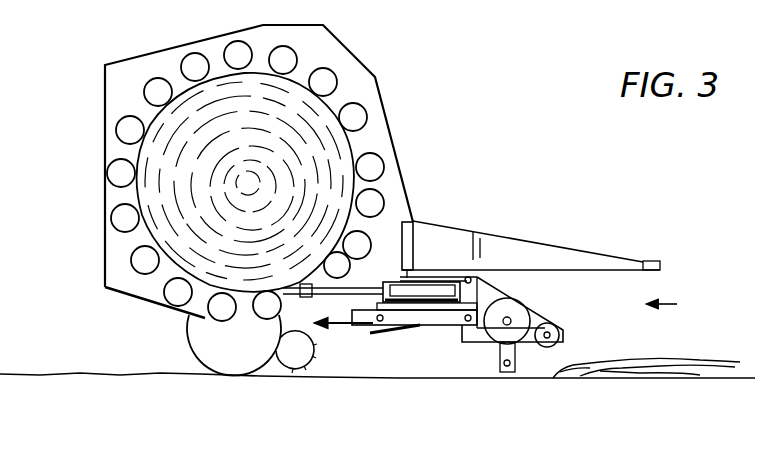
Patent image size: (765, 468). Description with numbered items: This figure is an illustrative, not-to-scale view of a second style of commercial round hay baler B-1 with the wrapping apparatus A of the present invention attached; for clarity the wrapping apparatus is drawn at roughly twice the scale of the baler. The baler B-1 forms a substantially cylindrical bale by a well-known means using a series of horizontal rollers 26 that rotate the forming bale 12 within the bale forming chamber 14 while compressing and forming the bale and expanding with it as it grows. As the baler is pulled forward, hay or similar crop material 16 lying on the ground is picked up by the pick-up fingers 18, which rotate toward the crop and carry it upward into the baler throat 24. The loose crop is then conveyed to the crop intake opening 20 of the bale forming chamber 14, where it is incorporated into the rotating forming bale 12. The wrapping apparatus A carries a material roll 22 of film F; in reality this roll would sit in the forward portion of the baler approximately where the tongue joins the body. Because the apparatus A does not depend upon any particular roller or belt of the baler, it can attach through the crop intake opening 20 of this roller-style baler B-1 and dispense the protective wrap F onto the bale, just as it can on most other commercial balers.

The forming bale 12 is at (322, 148).
The bale forming chamber 14 is at (316, 57).
The crop material 16 is at (630, 362).
The pick-up fingers 18 is at (307, 368).
The crop intake opening 20 is at (323, 278).
The material roll 22 is at (513, 305).
The baler throat 24 is at (304, 304).
The horizontal rollers 26 is at (144, 91).
The wrapping apparatus A is at (671, 303).
The film F is at (540, 310).
The commercial baler B-1 is at (409, 57).